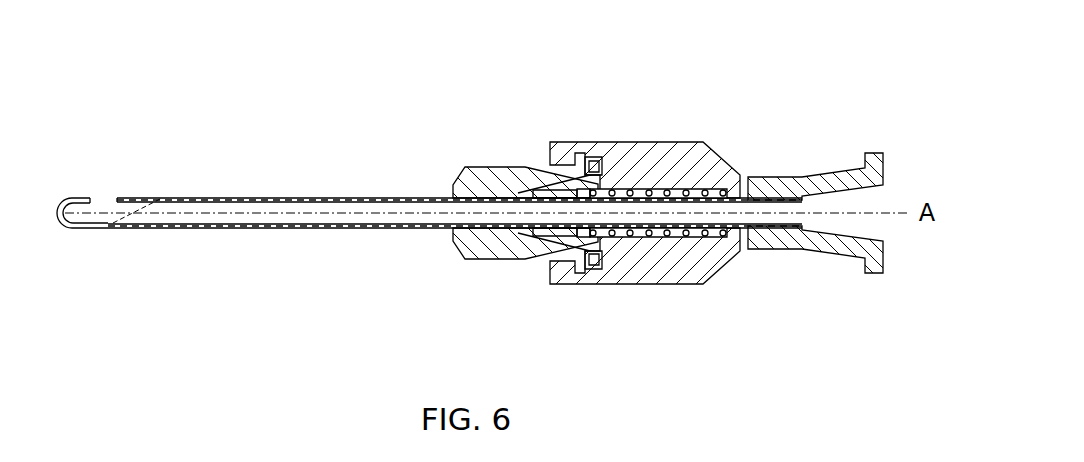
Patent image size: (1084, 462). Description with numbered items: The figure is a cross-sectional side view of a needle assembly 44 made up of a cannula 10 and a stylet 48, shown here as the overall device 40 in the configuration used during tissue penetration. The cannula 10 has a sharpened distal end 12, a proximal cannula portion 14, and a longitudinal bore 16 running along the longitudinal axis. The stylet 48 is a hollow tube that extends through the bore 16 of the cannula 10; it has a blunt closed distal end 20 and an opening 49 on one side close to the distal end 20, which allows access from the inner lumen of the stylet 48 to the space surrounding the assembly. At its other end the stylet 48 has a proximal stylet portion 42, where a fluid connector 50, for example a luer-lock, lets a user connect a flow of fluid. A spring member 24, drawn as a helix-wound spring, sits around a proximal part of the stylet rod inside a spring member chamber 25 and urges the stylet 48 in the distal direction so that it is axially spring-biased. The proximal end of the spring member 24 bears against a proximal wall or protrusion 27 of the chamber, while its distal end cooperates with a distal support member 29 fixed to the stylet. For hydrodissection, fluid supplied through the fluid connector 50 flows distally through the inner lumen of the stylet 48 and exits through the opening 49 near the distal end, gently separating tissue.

The cannula 10 is at (290, 198).
The sharpened distal end 12 is at (161, 176).
The proximal cannula portion 14 is at (490, 173).
The longitudinal bore 16 is at (377, 208).
The blunt distal end 20 is at (82, 213).
The spring member 24 is at (707, 193).
The spring member chamber 25 is at (660, 232).
The proximal wall or protrusion 27 is at (730, 233).
The distal support member 29 is at (590, 232).
The connector assembly 40 is at (760, 57).
The proximal stylet portion 42 is at (680, 147).
The needle assembly 44 is at (536, 83).
The stylet 48 is at (638, 66).
The opening 49 is at (107, 199).
The fluid connector 50 is at (867, 153).